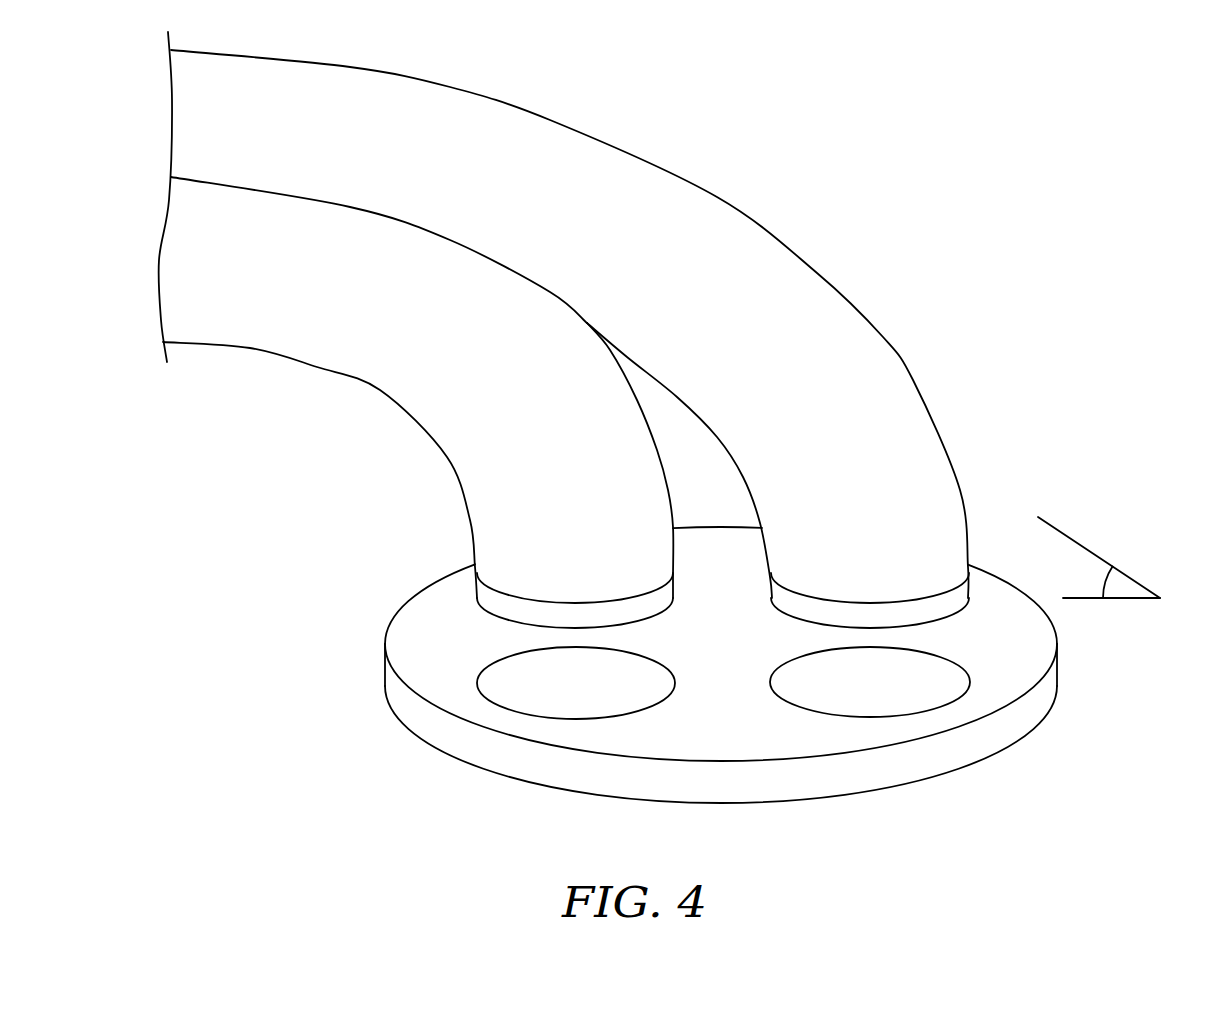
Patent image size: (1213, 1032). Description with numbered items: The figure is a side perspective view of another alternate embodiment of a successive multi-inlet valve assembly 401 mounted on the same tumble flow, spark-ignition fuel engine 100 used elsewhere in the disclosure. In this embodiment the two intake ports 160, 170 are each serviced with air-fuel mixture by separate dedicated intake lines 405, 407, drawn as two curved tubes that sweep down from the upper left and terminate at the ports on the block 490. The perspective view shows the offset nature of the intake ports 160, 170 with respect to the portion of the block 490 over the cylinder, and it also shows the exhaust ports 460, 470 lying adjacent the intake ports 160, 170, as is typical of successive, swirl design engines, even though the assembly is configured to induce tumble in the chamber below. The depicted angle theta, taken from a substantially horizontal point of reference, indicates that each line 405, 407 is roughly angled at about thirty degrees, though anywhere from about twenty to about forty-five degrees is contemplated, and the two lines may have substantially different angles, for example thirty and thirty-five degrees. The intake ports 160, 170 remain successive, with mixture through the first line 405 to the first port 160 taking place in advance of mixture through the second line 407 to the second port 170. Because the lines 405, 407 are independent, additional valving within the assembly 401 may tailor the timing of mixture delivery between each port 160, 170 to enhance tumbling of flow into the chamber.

The engine 100 is at (669, 417).
The successive multi-inlet valve assembly 401 is at (564, 315).
The first line 405 is at (395, 318).
The second line 407 is at (677, 258).
The block 490 is at (721, 665).
The exhaust port 460 is at (597, 693).
The exhaust port 470 is at (892, 694).
The first intake port 160 is at (647, 600).
The second intake port 170 is at (940, 600).